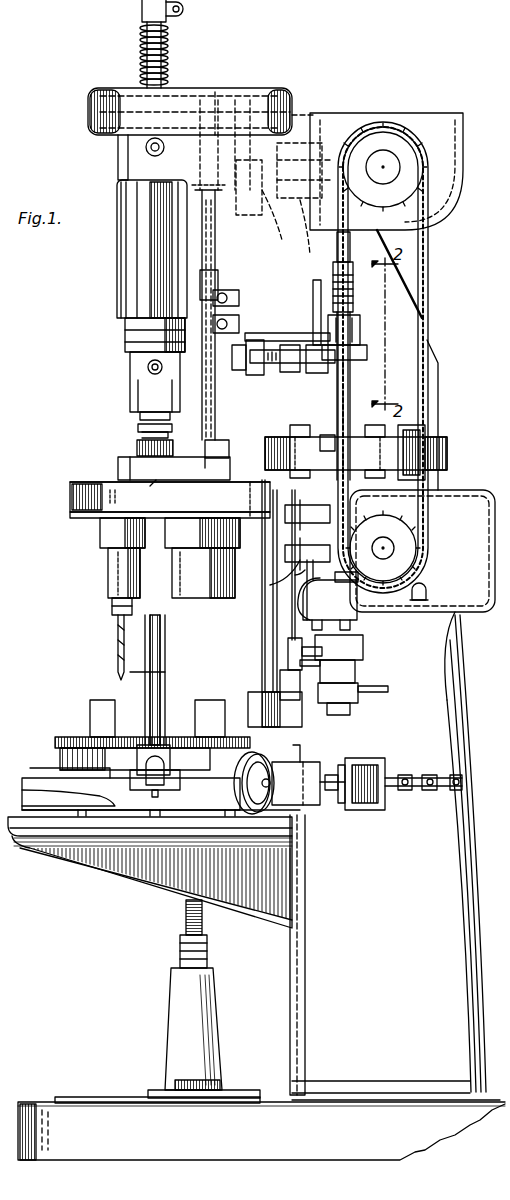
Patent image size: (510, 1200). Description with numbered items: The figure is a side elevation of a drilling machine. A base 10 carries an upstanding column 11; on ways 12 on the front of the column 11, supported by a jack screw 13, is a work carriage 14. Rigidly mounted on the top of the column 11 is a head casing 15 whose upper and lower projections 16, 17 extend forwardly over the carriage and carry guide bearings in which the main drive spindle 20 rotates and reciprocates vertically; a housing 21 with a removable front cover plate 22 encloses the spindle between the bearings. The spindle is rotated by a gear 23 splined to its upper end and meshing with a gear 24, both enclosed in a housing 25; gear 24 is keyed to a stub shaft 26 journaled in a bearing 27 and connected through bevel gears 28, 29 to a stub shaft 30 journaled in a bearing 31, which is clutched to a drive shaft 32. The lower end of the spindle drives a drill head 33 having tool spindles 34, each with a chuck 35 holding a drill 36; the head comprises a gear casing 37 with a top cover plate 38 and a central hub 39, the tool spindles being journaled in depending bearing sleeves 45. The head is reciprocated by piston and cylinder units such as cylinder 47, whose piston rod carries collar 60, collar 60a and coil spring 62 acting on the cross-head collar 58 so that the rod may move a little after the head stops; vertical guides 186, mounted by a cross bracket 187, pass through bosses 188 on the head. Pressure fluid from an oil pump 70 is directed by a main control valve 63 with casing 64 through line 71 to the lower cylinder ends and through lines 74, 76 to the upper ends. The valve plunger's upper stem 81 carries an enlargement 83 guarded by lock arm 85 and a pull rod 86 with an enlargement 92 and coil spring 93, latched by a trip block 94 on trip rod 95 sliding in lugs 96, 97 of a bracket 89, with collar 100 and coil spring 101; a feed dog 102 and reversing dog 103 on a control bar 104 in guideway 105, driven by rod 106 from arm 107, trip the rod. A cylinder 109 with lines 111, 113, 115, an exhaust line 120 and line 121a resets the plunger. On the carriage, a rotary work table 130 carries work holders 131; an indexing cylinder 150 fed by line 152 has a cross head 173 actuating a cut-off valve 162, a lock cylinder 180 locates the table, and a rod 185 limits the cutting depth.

The base 10 is at (261, 1128).
The column 11 is at (470, 1002).
The ways 12 is at (302, 940).
The jack screw 13 is at (182, 1000).
The work carriage 14 is at (100, 860).
The head casing 15 is at (438, 388).
The upper projection 16 is at (133, 162).
The lower projection 17 is at (142, 334).
The main drive spindle 20 is at (166, 58).
The housing 21 is at (133, 272).
The front cover plate 22 is at (125, 298).
The gear 23 is at (88, 118).
The gear 24 is at (268, 95).
The housing 25 is at (225, 92).
The stub shaft 26 is at (216, 164).
The bearing 27 is at (300, 108).
The bevel gear 28 is at (248, 218).
The bevel gear 29 is at (277, 222).
The stub shaft 30 is at (322, 140).
The bearing 31 is at (316, 237).
The drive shaft 32 is at (390, 165).
The drill head 33 is at (68, 503).
The tool spindle 34 is at (114, 570).
The chuck 35 is at (112, 604).
The drill 36 is at (118, 655).
The gear casing 37 is at (98, 520).
The top cover plate 38 is at (88, 480).
The central hub 39 is at (118, 468).
The bearing sleeve 45 is at (160, 552).
The cylinder 47 is at (148, 252).
The collar 58 is at (145, 442).
The collar 60 is at (161, 494).
The collar 60a is at (150, 418).
The coil spring 62 is at (150, 430).
The main control valve 63 is at (342, 605).
The cylindrical casing 64 is at (315, 608).
The oil pump 70 is at (462, 492).
The line 71 is at (148, 385).
The line 74 is at (290, 580).
The line 76 is at (148, 152).
The upper valve stem 81 is at (350, 444).
The tubular enlargement 83 is at (350, 395).
The lock arm 85 is at (320, 440).
The pull rod 86 is at (350, 255).
The bracket 89 is at (290, 345).
The enlargement 92 is at (360, 328).
The coil spring 93 is at (353, 300).
The trip block 94 is at (367, 355).
The trip rod 95 is at (270, 340).
The lug 96 is at (250, 376).
The lug 97 is at (318, 285).
The collar 100 is at (285, 372).
The coil spring 101 is at (310, 373).
The feed dog 102 is at (240, 320).
The reversing dog 103 is at (240, 300).
The control bar 104 is at (240, 284).
The vertical guideway 105 is at (215, 252).
The rod 106 is at (222, 428).
The arm 107 is at (210, 452).
The cylinder 109 is at (330, 715).
The line 111 is at (290, 518).
The line 113 is at (300, 663).
The line 115 is at (372, 686).
The exhaust line 120 is at (416, 548).
The line 121a is at (428, 594).
The rotary work table 130 is at (60, 742).
The work holder 131 is at (205, 693).
The cylinder 150 is at (370, 760).
The line 152 is at (262, 585).
The cut-off valve 162 is at (308, 800).
The cross head 173 is at (442, 790).
The cylinder 180 is at (172, 745).
The rod 185 is at (124, 674).
The guide 186 is at (288, 640).
The cross bracket 187 is at (280, 714).
The boss 188 is at (268, 500).